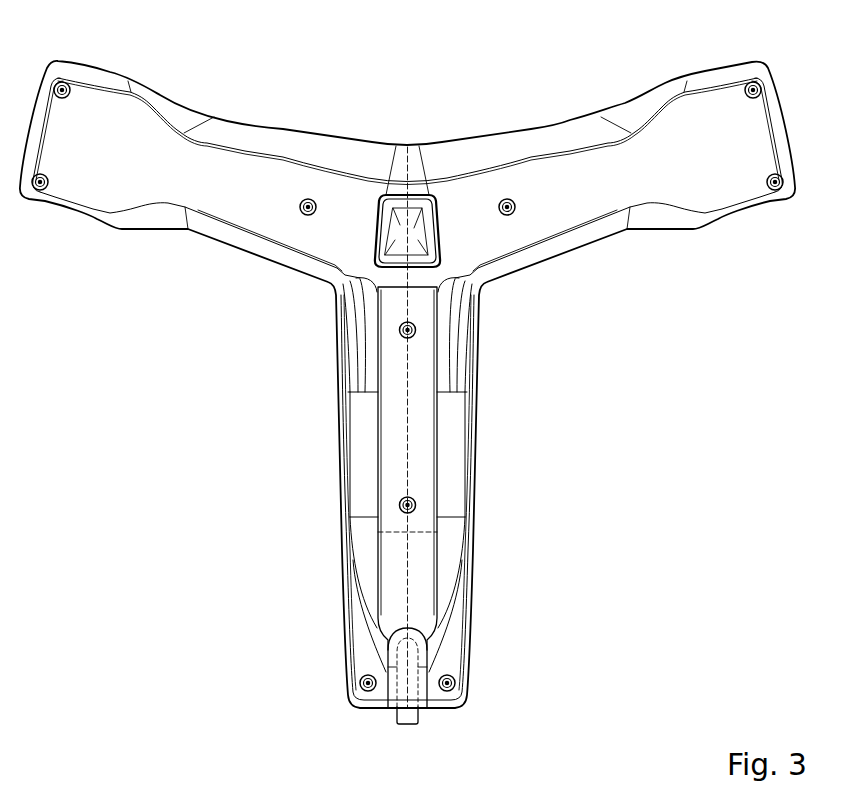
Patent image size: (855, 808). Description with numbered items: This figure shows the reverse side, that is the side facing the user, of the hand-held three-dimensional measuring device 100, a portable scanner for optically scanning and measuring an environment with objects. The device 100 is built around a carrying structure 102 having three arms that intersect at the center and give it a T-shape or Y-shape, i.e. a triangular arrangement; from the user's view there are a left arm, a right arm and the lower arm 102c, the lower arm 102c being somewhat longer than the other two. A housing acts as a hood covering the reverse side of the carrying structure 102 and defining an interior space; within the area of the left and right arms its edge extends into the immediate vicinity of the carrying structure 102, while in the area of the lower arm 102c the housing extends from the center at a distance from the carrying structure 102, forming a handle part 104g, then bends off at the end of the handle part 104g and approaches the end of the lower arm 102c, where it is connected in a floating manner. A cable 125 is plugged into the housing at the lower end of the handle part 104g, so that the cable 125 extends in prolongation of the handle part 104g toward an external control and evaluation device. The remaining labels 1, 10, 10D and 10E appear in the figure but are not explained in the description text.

The receptacle 1 is at (386, 200).
The frame 10 is at (607, 207).
The left mounting pad 10D is at (110, 72).
The right mounting pad 10E is at (698, 75).
The 3D measuring device 100 is at (302, 431).
The carrying structure 102 is at (476, 461).
The lower arm 102c is at (453, 570).
The handle part 104g is at (415, 428).
The cable 125 is at (410, 712).